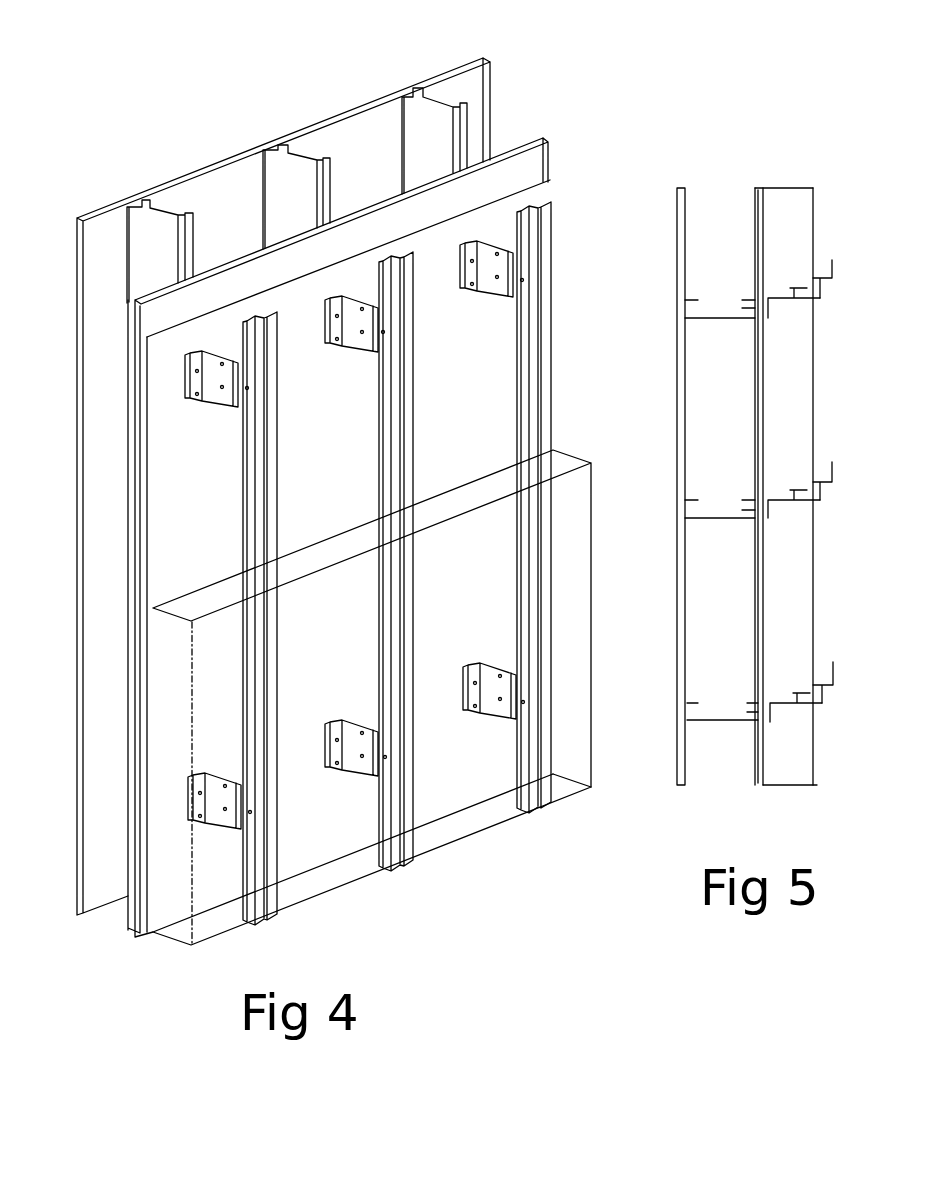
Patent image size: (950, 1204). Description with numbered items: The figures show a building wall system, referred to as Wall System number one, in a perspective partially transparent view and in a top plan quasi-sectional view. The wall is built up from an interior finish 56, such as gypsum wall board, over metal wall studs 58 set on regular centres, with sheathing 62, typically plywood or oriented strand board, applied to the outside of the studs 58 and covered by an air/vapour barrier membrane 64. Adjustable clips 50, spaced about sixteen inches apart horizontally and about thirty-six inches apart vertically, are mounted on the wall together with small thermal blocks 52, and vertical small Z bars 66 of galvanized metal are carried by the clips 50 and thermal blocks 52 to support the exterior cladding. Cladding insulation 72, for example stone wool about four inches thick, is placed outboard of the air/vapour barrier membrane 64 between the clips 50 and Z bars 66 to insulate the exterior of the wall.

In FIG. 4, the adjustable clip 50 is at (432, 439).
In FIG. 5, the adjustable clip 50 is at (824, 463).
In FIG. 4, the small thermal block 52 is at (468, 242).
In FIG. 5, the small thermal block 52 is at (821, 279).
In FIG. 4, the interior finish 56 is at (333, 117).
In FIG. 5, the interior finish 56 is at (677, 757).
In FIG. 4, the wall stud 58 is at (287, 177).
In FIG. 5, the wall stud 58 is at (720, 723).
In FIG. 4, the sheathing 62 is at (250, 269).
In FIG. 5, the sheathing 62 is at (757, 760).
In FIG. 4, the air/vapour barrier membrane 64 is at (420, 252).
In FIG. 5, the air/vapour barrier membrane 64 is at (768, 770).
In FIG. 4, the small Z bar 66 is at (553, 800).
In FIG. 5, the small Z bar 66 is at (833, 271).
In FIG. 4, the cladding insulation 72 is at (345, 869).
In FIG. 5, the cladding insulation 72 is at (812, 785).